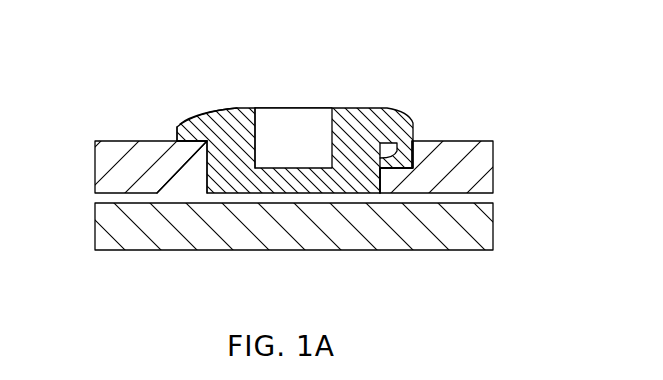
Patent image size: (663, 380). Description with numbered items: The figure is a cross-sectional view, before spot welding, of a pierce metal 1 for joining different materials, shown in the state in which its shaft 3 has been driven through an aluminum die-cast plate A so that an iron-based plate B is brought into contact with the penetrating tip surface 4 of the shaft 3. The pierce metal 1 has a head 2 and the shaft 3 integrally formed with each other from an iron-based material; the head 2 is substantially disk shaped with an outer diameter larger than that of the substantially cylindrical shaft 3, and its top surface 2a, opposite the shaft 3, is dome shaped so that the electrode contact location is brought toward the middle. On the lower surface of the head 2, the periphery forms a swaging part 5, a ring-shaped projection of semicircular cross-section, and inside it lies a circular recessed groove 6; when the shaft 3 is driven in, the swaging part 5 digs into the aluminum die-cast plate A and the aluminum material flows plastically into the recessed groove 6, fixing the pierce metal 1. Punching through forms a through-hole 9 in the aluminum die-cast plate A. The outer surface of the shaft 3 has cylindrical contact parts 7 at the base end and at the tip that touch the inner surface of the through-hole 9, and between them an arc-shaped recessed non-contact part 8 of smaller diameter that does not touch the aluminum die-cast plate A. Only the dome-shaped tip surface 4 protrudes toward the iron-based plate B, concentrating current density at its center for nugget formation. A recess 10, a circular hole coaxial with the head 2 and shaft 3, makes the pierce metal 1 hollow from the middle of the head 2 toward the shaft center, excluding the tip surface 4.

The pierce metal 1 is at (291, 169).
The head 2 is at (194, 106).
The top surface 2a is at (215, 109).
The shaft 3 is at (187, 194).
The tip surface 4 is at (378, 160).
The swaging part 5 is at (162, 155).
The recessed groove 6 is at (182, 146).
The contact part 7 is at (408, 157).
The non-contact part 8 is at (410, 166).
The through-hole 9 is at (263, 163).
The recess 10 is at (303, 124).
The aluminum die-cast plate A is at (113, 140).
The iron-based plate B is at (112, 252).